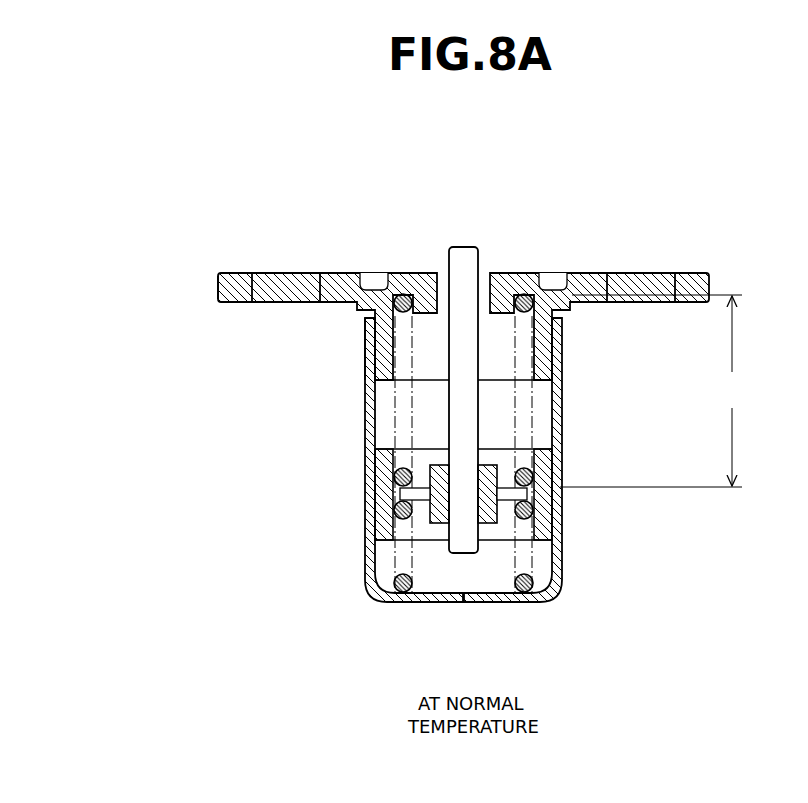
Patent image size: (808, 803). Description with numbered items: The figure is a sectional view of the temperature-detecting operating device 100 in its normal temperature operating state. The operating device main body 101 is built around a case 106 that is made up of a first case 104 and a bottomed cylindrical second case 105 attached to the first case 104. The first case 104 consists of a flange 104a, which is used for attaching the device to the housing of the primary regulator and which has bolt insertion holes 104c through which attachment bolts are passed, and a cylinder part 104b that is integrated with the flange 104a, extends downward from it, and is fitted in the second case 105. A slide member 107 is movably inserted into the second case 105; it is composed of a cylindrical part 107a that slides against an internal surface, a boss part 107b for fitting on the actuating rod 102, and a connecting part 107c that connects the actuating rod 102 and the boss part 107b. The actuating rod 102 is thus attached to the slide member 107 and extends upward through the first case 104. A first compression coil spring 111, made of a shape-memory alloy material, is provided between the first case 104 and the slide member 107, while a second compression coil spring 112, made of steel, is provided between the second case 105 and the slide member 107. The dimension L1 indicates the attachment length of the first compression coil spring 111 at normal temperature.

The temperature-detecting operating device 100 is at (323, 165).
The operating device main body 101 is at (335, 424).
The actuating rod 102 is at (463, 256).
The first case 104 is at (413, 263).
The flange 104a is at (222, 287).
The cylinder part 104b is at (365, 342).
The bolt insertion holes 104c is at (313, 292).
The second case 105 is at (366, 566).
The case 106 is at (330, 212).
The slide member 107 is at (440, 525).
The cylindrical part 107a is at (375, 499).
The boss part 107b is at (486, 533).
The connecting part 107c is at (433, 505).
The first compression coil spring 111 is at (508, 293).
The second compression coil spring 112 is at (523, 580).
The attachment length L1 is at (652, 391).